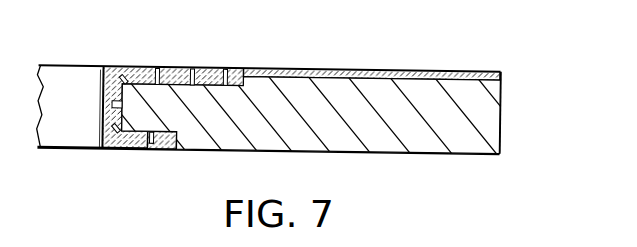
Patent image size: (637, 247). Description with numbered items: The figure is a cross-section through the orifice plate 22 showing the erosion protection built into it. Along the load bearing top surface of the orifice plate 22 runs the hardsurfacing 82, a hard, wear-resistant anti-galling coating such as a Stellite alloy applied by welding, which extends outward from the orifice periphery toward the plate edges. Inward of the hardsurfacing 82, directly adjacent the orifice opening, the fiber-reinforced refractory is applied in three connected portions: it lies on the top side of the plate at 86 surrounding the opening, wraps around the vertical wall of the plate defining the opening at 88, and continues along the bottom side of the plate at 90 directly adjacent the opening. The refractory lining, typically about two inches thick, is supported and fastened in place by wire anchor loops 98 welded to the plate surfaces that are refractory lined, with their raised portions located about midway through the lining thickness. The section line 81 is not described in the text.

The orifice plate 22 is at (508, 106).
The joint line 81 is at (96, 100).
The hardsurfacing 82 is at (430, 71).
The refractory on top side of orifice plate 86 is at (175, 66).
The refractory on vertical walls of opening 88 is at (102, 126).
The refractory on bottom side of orifice plate 90 is at (136, 148).
The wire anchor loops 98 is at (157, 66).